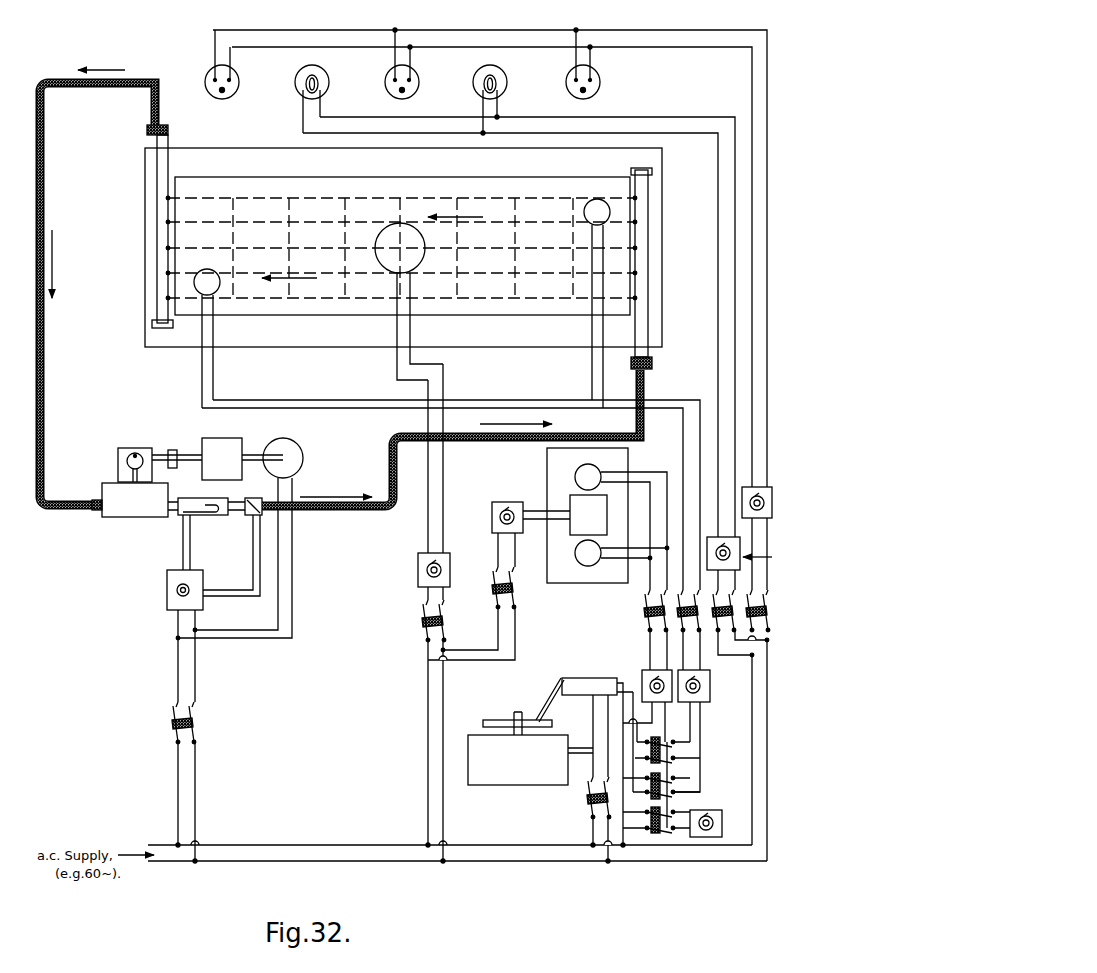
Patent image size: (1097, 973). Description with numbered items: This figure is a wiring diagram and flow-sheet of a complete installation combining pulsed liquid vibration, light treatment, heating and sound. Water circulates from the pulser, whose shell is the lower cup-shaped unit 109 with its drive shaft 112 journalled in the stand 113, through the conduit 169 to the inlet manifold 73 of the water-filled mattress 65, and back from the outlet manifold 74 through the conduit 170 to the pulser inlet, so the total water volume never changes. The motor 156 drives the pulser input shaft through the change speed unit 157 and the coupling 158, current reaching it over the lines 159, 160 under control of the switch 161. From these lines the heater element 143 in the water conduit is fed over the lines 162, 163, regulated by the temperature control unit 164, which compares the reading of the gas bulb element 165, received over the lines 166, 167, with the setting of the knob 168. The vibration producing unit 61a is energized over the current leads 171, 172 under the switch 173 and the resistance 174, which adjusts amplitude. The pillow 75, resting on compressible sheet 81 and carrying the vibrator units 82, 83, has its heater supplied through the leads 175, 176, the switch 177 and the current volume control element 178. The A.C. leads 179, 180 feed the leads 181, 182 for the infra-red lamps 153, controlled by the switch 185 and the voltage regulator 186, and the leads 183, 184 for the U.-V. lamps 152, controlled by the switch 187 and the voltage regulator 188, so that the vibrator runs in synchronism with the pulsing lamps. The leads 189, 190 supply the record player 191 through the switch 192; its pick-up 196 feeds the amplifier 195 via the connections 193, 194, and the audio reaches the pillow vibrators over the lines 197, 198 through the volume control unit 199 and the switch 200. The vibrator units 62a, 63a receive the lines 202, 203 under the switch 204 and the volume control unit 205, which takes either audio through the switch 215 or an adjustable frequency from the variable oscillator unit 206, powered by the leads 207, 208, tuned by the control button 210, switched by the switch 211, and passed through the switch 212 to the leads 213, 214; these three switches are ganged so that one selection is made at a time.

The U.-V. lamps 152 is at (210, 90).
The infra-red lamps 153 is at (298, 75).
The vibrator unit 62a is at (590, 200).
The vibrator unit 63a is at (198, 273).
The vibration producing unit 61a is at (378, 258).
The inlet manifold 73 is at (644, 230).
The outlet manifold 74 is at (160, 262).
The mattress 65 is at (362, 293).
The conduit 170 is at (44, 393).
The conduit 169 is at (390, 462).
The drive shaft 112 is at (133, 454).
The stand 113 is at (117, 465).
The coupling 158 is at (172, 449).
The change speed unit 157 is at (236, 437).
The motor 156 is at (293, 446).
The lower cup-shaped unit 109 is at (122, 520).
The heater element 143 is at (200, 516).
The gas bulb element 165 is at (246, 496).
The line 162 is at (182, 537).
The line 163 is at (190, 545).
The line 166 is at (254, 540).
The line 167 is at (261, 560).
The knob 168 is at (177, 587).
The temperature control unit 164 is at (168, 603).
The line 159 is at (280, 604).
The line 160 is at (300, 622).
The switch 161 is at (172, 728).
The current lead 171 is at (427, 513).
The current lead 172 is at (444, 488).
The resistance 174 is at (417, 569).
The switch 173 is at (420, 628).
The lead 175 is at (490, 655).
The lead 176 is at (492, 663).
The switch 177 is at (496, 592).
The current volume control element 178 is at (491, 520).
The vibrator unit 82 is at (578, 470).
The pillow heater element 81 is at (576, 531).
The vibrator unit 83 is at (578, 560).
The pillow 75 is at (612, 463).
The voltage regulator 188 is at (762, 495).
The voltage regulator 186 is at (732, 553).
The switch 187 is at (742, 602).
The switch 185 is at (742, 618).
The lead 184 is at (768, 278).
The lead 183 is at (753, 300).
The lead 182 is at (734, 300).
The lead 181 is at (717, 321).
The line 202 is at (660, 400).
The line 203 is at (698, 400).
The switch 200 is at (648, 606).
The switch 204 is at (682, 614).
The line 197 is at (649, 640).
The line 198 is at (666, 650).
The volume control unit 199 is at (665, 704).
The volume control unit 205 is at (706, 676).
The lead 213 is at (691, 712).
The lead 214 is at (701, 732).
The switch 215 is at (674, 745).
The switch 212 is at (676, 785).
The switch 211 is at (655, 836).
The variable oscillator unit 206 is at (694, 838).
The control button 210 is at (710, 828).
The lead 207 is at (620, 862).
The lead 208 is at (632, 850).
The amplifier 195 is at (580, 678).
The pick-up 196 is at (556, 688).
The record player 191 is at (480, 774).
The connection 193 is at (592, 702).
The connection 194 is at (607, 716).
The switch 192 is at (588, 797).
The lead 189 is at (592, 835).
The lead 190 is at (606, 852).
The lead 179 is at (753, 760).
The lead 180 is at (754, 790).